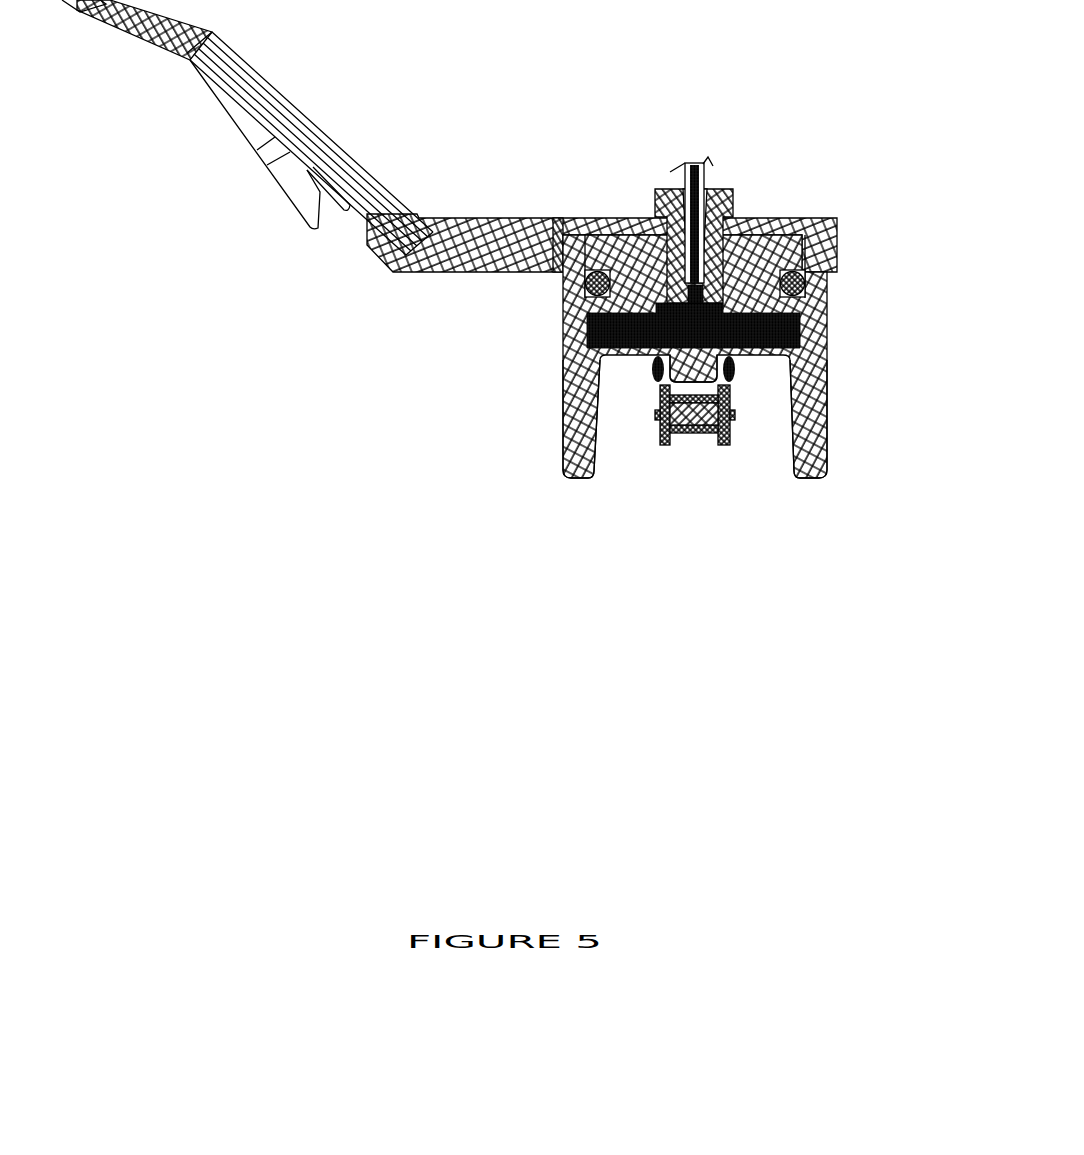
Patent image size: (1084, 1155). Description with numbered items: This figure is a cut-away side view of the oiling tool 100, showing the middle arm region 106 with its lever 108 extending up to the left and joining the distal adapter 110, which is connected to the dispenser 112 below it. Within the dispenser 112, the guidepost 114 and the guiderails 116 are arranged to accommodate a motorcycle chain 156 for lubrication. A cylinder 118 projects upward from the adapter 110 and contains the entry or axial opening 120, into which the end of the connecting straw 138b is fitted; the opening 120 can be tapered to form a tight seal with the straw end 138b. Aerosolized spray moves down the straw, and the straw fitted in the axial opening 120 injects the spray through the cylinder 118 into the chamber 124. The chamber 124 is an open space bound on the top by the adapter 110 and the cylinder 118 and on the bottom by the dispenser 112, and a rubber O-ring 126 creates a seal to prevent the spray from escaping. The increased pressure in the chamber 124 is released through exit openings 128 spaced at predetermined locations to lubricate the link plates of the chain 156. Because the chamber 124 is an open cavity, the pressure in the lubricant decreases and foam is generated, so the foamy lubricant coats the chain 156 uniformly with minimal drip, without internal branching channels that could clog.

The oiling tool 100 is at (803, 52).
The middle arm region 106 is at (323, 112).
The lever 108 is at (257, 168).
The distal adapter 110 is at (848, 216).
The dispenser 112 is at (838, 402).
The guidepost 114 is at (688, 368).
The guiderails 116 is at (568, 486).
The cylinder 118 is at (744, 193).
The entry or axial opening 120 is at (716, 178).
The chamber 124 is at (752, 331).
The rubber O-ring 126 is at (583, 283).
The exit openings 128 is at (658, 343).
The end of the connecting straw 138b is at (680, 155).
The motorcycle chain 156 is at (662, 451).